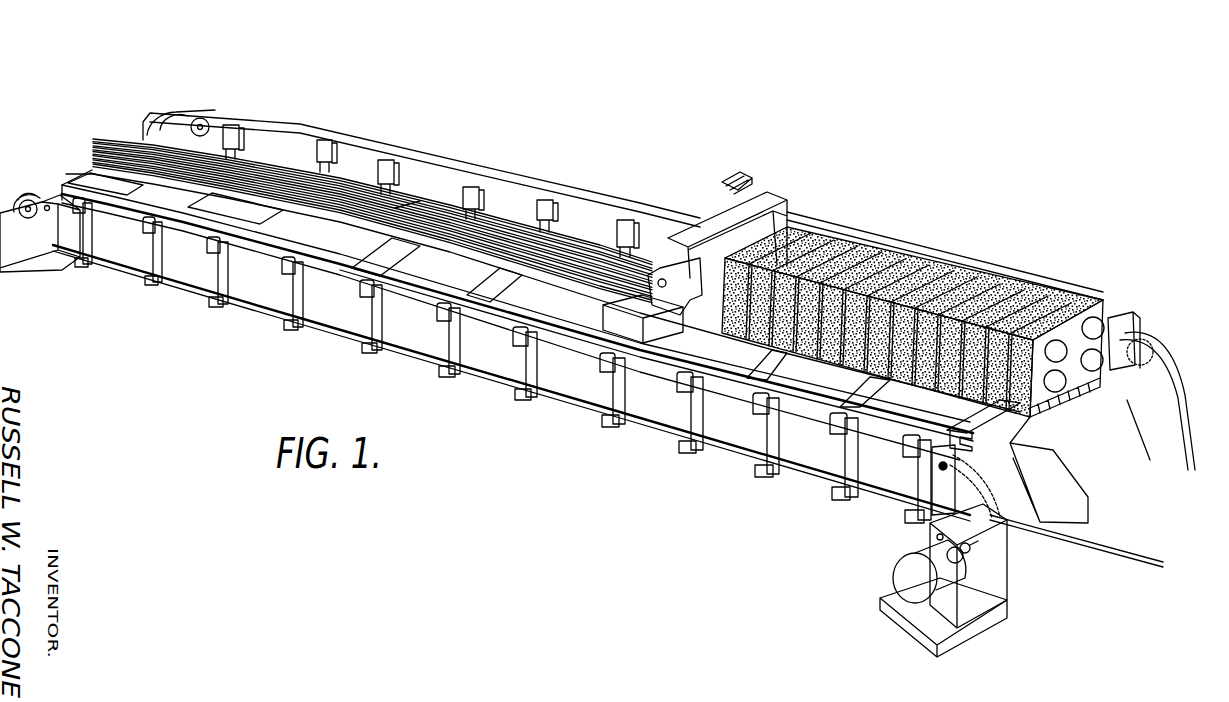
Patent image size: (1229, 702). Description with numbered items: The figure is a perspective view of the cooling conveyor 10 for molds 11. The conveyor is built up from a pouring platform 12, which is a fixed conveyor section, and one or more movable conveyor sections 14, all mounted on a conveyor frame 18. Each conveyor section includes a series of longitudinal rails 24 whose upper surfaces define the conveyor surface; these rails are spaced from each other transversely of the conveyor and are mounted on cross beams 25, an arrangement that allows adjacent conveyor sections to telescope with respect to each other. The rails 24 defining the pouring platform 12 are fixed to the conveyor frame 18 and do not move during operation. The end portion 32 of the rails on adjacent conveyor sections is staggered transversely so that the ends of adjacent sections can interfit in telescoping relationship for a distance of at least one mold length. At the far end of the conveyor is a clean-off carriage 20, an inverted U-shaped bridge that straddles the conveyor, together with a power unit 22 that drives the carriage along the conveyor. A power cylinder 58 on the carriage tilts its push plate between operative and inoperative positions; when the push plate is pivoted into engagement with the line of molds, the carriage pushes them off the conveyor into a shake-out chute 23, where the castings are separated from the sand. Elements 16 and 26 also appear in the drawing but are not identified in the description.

The conveyor 10 is at (535, 153).
The molds 11 is at (1035, 278).
The pouring platform 12 is at (272, 165).
The movable conveyor sections 14 is at (517, 228).
The discharge chute 16 is at (1098, 400).
The conveyor frame 18 is at (399, 337).
The clean-off carriage 20 is at (777, 195).
The power unit 22 is at (885, 567).
The shake-out chute 23 is at (1165, 408).
The longitudinal rails 24 is at (95, 163).
The cross beams 25 is at (1085, 322).
The cross slats 26 is at (190, 199).
The end portion of the rails 32 is at (412, 208).
The power cylinder 58 is at (738, 175).